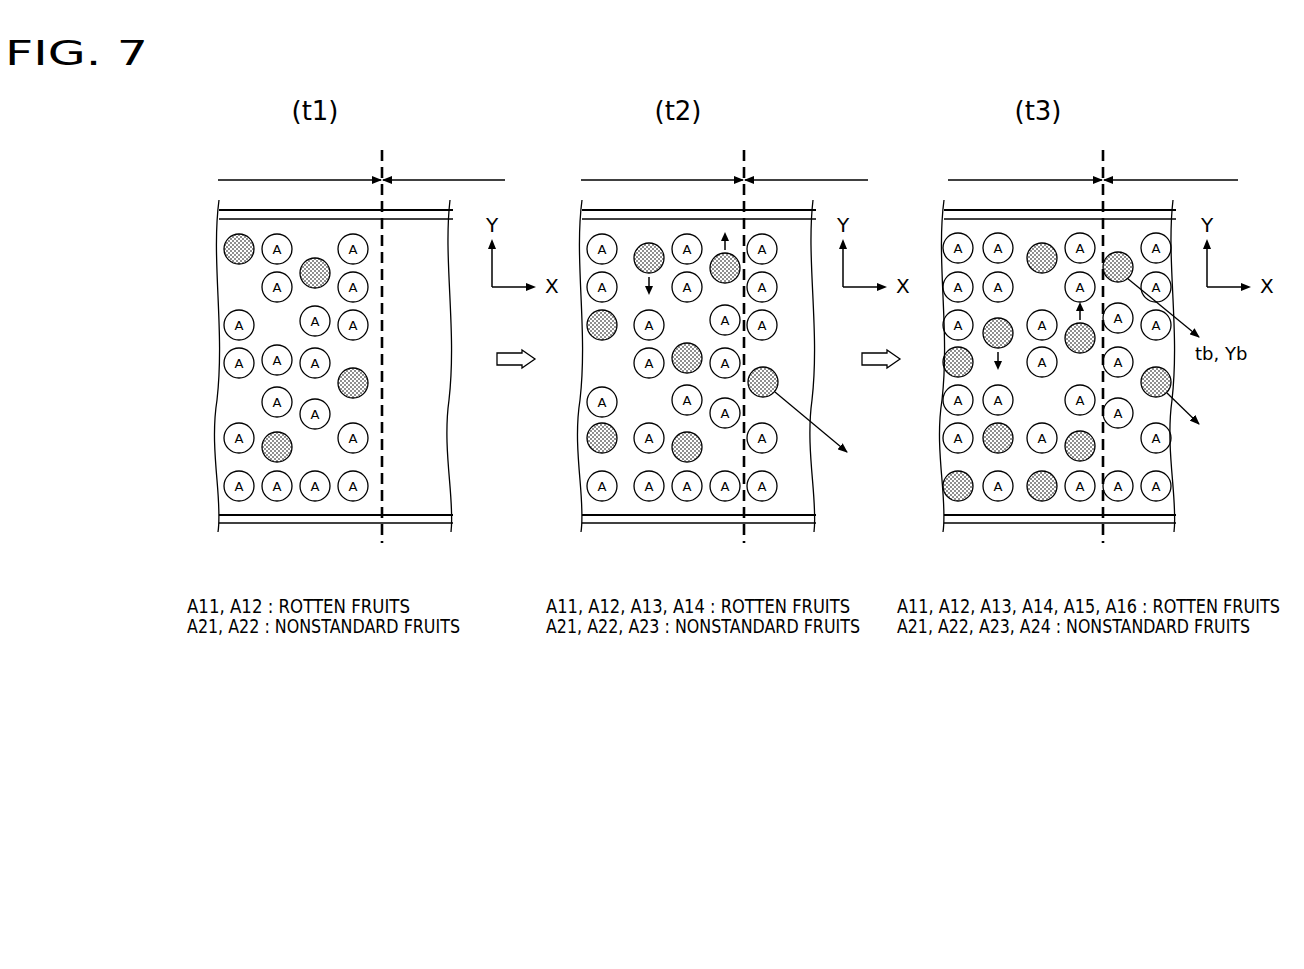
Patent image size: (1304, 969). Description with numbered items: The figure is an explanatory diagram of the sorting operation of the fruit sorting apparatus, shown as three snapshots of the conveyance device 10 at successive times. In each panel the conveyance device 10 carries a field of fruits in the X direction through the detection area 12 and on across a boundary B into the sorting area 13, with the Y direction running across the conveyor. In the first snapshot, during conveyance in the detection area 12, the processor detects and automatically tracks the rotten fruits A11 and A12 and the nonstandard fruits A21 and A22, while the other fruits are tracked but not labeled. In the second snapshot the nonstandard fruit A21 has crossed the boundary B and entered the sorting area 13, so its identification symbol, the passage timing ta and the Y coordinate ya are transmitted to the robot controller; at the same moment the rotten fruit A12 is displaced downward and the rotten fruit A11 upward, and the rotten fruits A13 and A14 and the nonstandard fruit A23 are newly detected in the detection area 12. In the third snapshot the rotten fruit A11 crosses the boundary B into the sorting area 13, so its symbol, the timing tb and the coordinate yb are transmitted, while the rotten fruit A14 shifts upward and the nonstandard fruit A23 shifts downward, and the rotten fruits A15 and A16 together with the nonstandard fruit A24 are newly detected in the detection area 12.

The conveyance device 10 is at (258, 498).
The detection area 12 is at (649, 164).
The sorting area 13 is at (822, 164).
The boundary B is at (744, 362).
The rotten fruit A11 is at (716, 270).
The rotten fruit A12 is at (640, 253).
The rotten fruit A13 is at (800, 438).
The rotten fruit A14 is at (883, 348).
The rotten fruit A15 is at (1042, 486).
The rotten fruit A16 is at (958, 362).
The nonstandard fruit A21 is at (792, 423).
The nonstandard fruit A22 is at (678, 446).
The nonstandard fruit A23 is at (800, 329).
The nonstandard fruit A24 is at (958, 486).